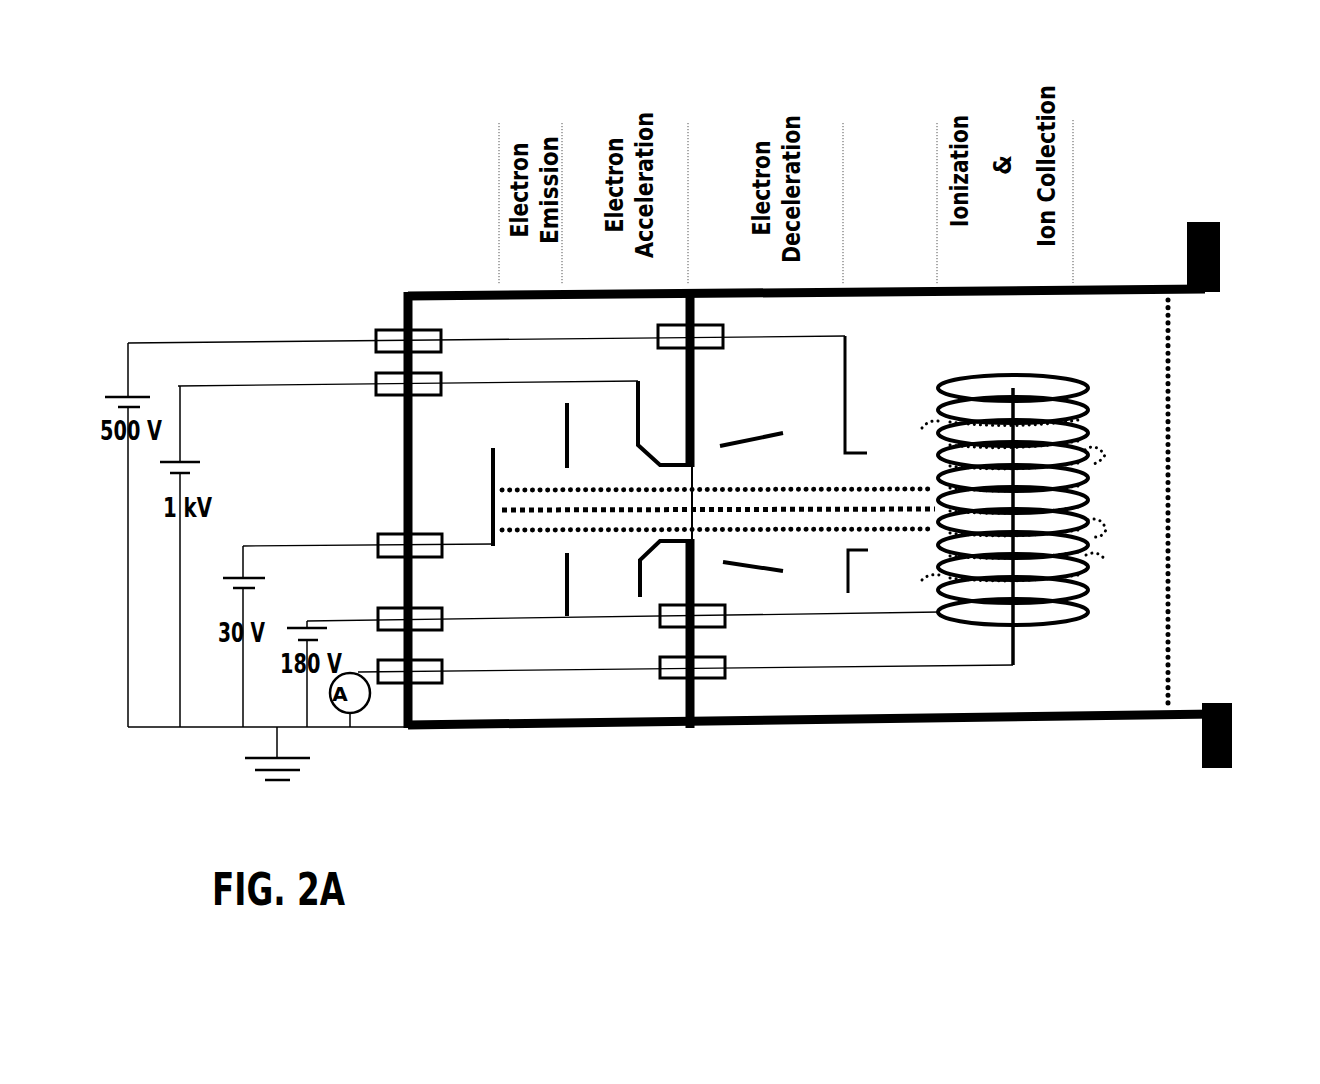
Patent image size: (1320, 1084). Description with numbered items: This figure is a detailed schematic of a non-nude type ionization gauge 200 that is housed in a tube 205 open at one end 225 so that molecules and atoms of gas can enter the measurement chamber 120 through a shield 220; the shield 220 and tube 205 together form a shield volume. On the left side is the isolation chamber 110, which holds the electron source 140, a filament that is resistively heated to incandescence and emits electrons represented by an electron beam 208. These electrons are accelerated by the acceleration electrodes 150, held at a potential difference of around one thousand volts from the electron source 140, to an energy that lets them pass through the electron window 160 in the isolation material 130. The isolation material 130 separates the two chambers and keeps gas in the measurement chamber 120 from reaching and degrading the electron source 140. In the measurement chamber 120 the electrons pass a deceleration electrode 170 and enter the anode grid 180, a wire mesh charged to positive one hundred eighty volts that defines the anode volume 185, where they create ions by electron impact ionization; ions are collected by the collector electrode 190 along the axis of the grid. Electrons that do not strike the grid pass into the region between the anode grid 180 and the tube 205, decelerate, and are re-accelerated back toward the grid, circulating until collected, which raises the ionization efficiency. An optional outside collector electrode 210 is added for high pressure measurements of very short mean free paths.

The ionization gauge 200 is at (1124, 118).
The tube 205 is at (623, 729).
The isolation chamber 110 is at (497, 549).
The electron source 140 is at (487, 651).
The acceleration electrode 150 is at (643, 598).
The isolation material 130 is at (697, 700).
The electron window 160 is at (694, 476).
The electron beam 208 is at (815, 486).
The outside collector electrode 210 is at (783, 575).
The deceleration electrode 170 is at (861, 596).
The measurement chamber 120 is at (926, 636).
The anode grid 180 is at (1091, 614).
The anode volume 185 is at (993, 394).
The collector electrode 190 is at (1019, 639).
The shield 220 is at (1173, 633).
The open end 225 is at (1238, 497).